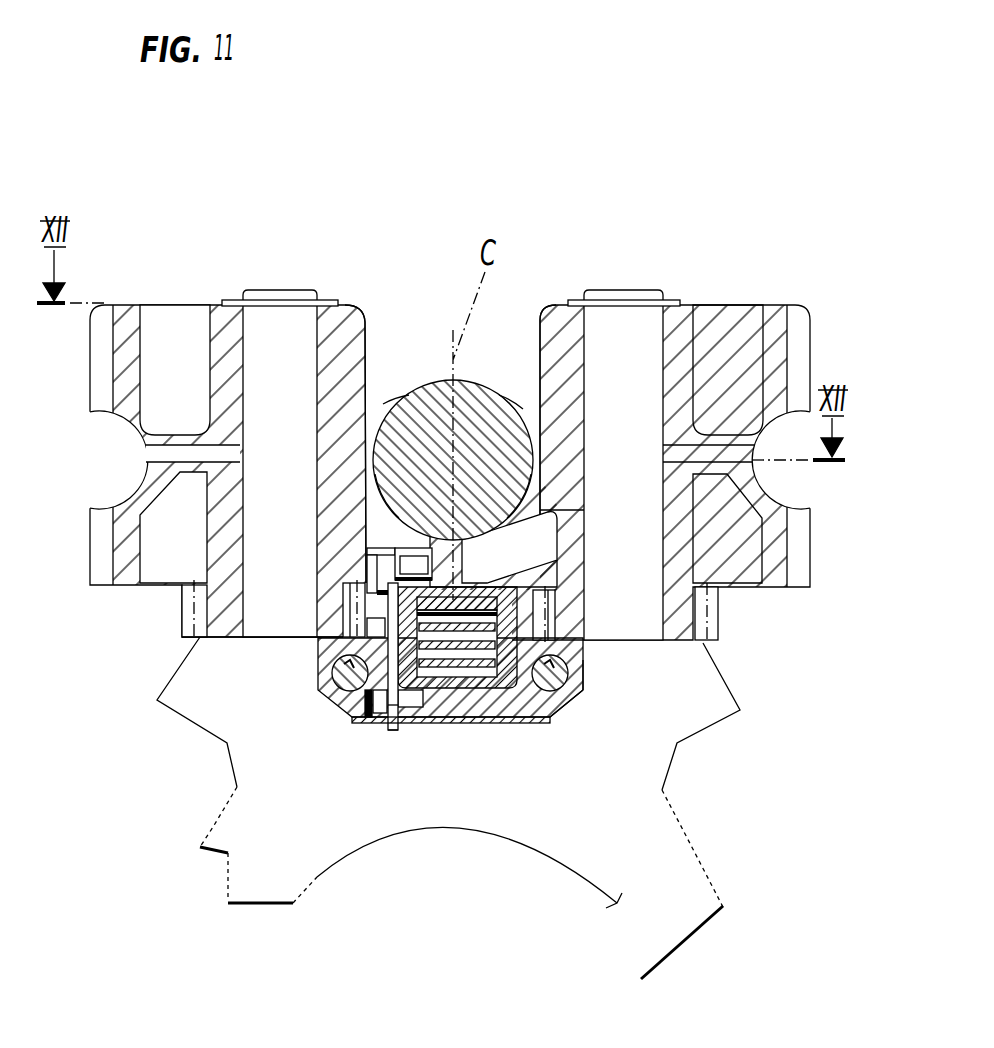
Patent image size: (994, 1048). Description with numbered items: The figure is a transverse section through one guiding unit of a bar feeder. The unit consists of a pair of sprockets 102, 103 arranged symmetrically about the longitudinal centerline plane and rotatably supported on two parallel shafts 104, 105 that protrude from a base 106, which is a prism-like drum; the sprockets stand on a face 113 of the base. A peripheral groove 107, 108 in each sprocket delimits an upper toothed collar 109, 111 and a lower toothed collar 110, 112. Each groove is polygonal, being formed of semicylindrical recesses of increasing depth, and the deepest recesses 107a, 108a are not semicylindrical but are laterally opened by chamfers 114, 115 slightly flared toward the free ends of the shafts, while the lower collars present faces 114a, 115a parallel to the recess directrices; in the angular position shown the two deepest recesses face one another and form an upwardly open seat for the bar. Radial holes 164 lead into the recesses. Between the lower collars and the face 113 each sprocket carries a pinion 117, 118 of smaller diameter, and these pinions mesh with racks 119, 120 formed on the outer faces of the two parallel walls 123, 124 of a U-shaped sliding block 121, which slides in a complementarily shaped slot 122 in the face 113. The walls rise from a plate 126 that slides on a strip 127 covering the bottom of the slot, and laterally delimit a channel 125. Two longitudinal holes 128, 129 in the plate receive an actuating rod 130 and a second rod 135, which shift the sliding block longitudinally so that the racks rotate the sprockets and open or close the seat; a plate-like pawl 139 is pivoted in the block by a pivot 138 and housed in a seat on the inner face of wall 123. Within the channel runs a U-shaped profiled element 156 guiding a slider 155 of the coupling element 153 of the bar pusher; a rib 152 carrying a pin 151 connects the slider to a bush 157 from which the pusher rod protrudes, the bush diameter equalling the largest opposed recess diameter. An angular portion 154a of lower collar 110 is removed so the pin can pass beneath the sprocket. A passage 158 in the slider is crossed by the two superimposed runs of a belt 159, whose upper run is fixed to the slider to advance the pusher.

The sprocket 102 is at (165, 292).
The sprocket 103 is at (728, 292).
The shaft 104 is at (278, 320).
The shaft 105 is at (628, 330).
The base 106 is at (612, 905).
The peripheral groove 107 is at (130, 478).
The peripheral groove 108 is at (812, 478).
The recess 107a is at (390, 400).
The recess 108a is at (515, 405).
The upper toothed collar 109 is at (101, 320).
The lower toothed collar 110 is at (99, 568).
The upper toothed collar 111 is at (798, 330).
The lower toothed collar 112 is at (798, 575).
The face 113 is at (200, 637).
The chamfer 114 is at (362, 330).
The chamfer 115 is at (540, 355).
The face 114a is at (409, 488).
The face 115a is at (495, 480).
The pinion 117 is at (187, 613).
The pinion 118 is at (712, 625).
The rack 119 is at (350, 600).
The rack 120 is at (553, 603).
The sliding block 121 is at (592, 685).
The slot 122 is at (352, 703).
The wall 123 is at (345, 627).
The wall 124 is at (533, 615).
The channel 125 is at (492, 583).
The plate 126 is at (533, 724).
The strip 127 is at (555, 723).
The longitudinal hole 128 is at (320, 673).
The longitudinal hole 129 is at (578, 672).
The rod 130 is at (350, 695).
The rod 135 is at (573, 707).
The pivot 138 is at (367, 727).
The pawl 139 is at (385, 757).
The pin 151 is at (378, 567).
The rib 152 is at (380, 548).
The coupling element 153 is at (426, 375).
The angular portion 154a is at (398, 560).
The slider 155 is at (513, 722).
The U-shaped profiled element 156 is at (462, 727).
The bush 157 is at (465, 383).
The passage 158 is at (432, 722).
The belt 159 is at (476, 722).
The radial hole 164 is at (703, 457).